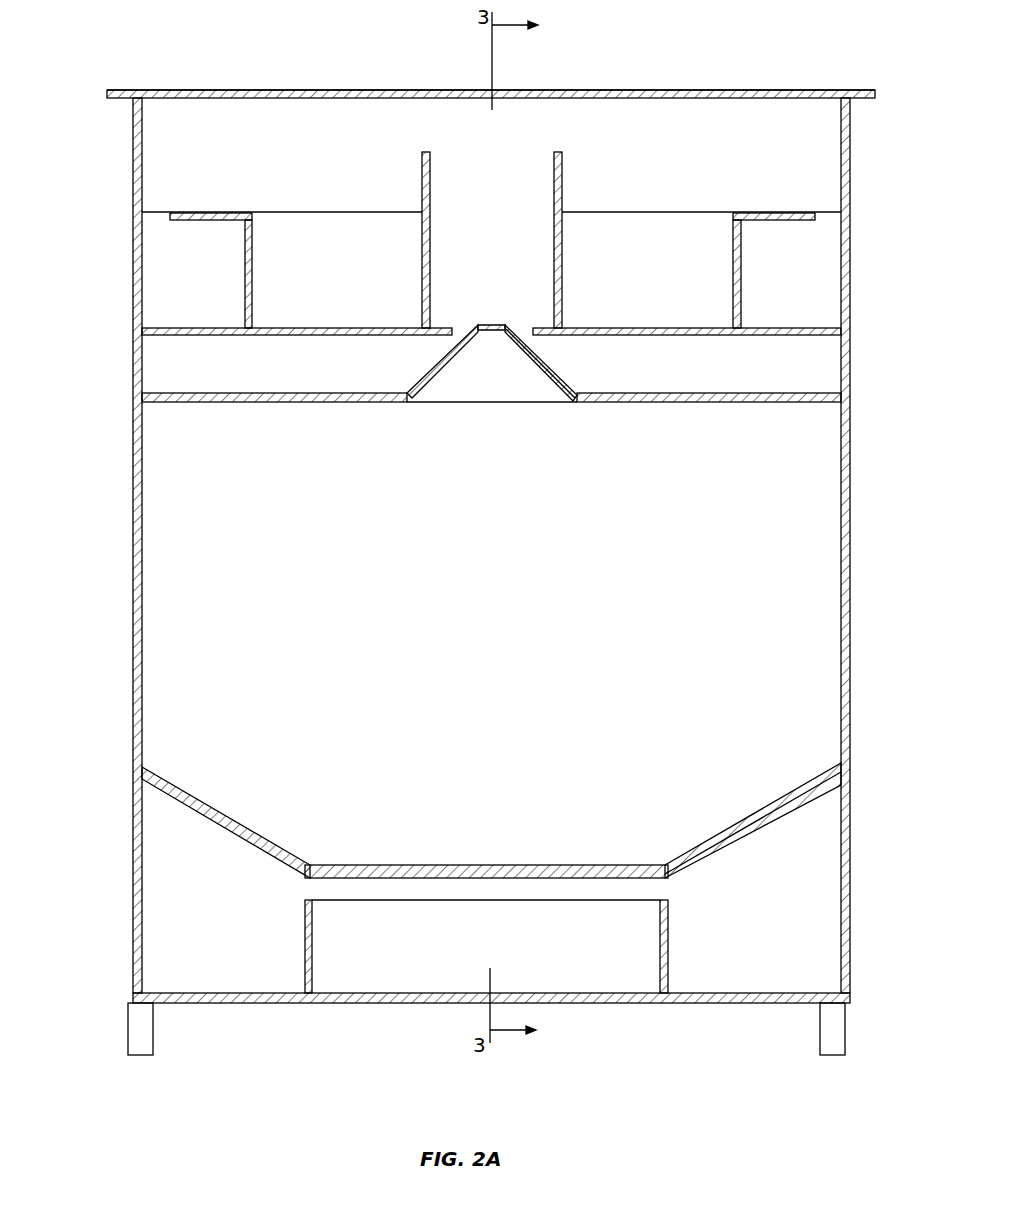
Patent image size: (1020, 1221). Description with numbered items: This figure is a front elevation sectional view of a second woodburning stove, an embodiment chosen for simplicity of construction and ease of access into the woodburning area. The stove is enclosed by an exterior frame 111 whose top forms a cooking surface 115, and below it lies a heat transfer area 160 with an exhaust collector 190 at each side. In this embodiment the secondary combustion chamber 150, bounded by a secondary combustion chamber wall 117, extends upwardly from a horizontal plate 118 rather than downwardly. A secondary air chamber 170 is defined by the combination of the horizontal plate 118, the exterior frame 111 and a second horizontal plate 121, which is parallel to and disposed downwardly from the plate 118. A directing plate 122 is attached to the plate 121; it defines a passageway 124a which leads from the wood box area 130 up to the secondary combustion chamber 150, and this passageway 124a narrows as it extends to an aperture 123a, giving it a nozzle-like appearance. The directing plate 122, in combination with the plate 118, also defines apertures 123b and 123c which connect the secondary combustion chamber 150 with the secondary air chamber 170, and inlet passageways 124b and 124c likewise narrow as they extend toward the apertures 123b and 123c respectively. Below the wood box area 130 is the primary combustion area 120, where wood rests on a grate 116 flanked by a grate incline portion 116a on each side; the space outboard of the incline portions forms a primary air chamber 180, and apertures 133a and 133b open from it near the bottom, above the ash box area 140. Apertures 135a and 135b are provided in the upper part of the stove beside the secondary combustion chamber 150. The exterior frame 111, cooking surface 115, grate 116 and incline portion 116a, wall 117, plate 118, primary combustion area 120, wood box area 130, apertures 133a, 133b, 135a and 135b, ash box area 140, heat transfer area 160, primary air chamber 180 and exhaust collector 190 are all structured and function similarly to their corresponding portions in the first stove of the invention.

The exterior frame 111 is at (852, 425).
The cooking surface 115 is at (510, 88).
The grate 116 is at (520, 865).
The grate incline portion 116a is at (230, 805).
The secondary combustion chamber wall 117 is at (422, 185).
The horizontal plate 118 is at (322, 328).
The primary combustion area 120 is at (507, 773).
The second horizontal plate 121 is at (683, 405).
The directing plate 122 is at (452, 405).
The aperture 123a is at (497, 322).
The aperture 123b is at (462, 328).
The aperture 123c is at (523, 328).
The passageway 124a is at (495, 372).
The inlet passageway 124b is at (410, 350).
The inlet passageway 124c is at (555, 358).
The wood box area 130 is at (752, 598).
The aperture 133a is at (308, 885).
The aperture 133b is at (665, 885).
The aperture 135a is at (157, 218).
The aperture 135b is at (836, 228).
The ash box area 140 is at (535, 973).
The secondary combustion chamber 150 is at (505, 193).
The heat transfer area 160 is at (718, 128).
The secondary air chamber 170 is at (243, 380).
The primary air chamber 180 is at (178, 852).
The exhaust collector 190 is at (183, 270).